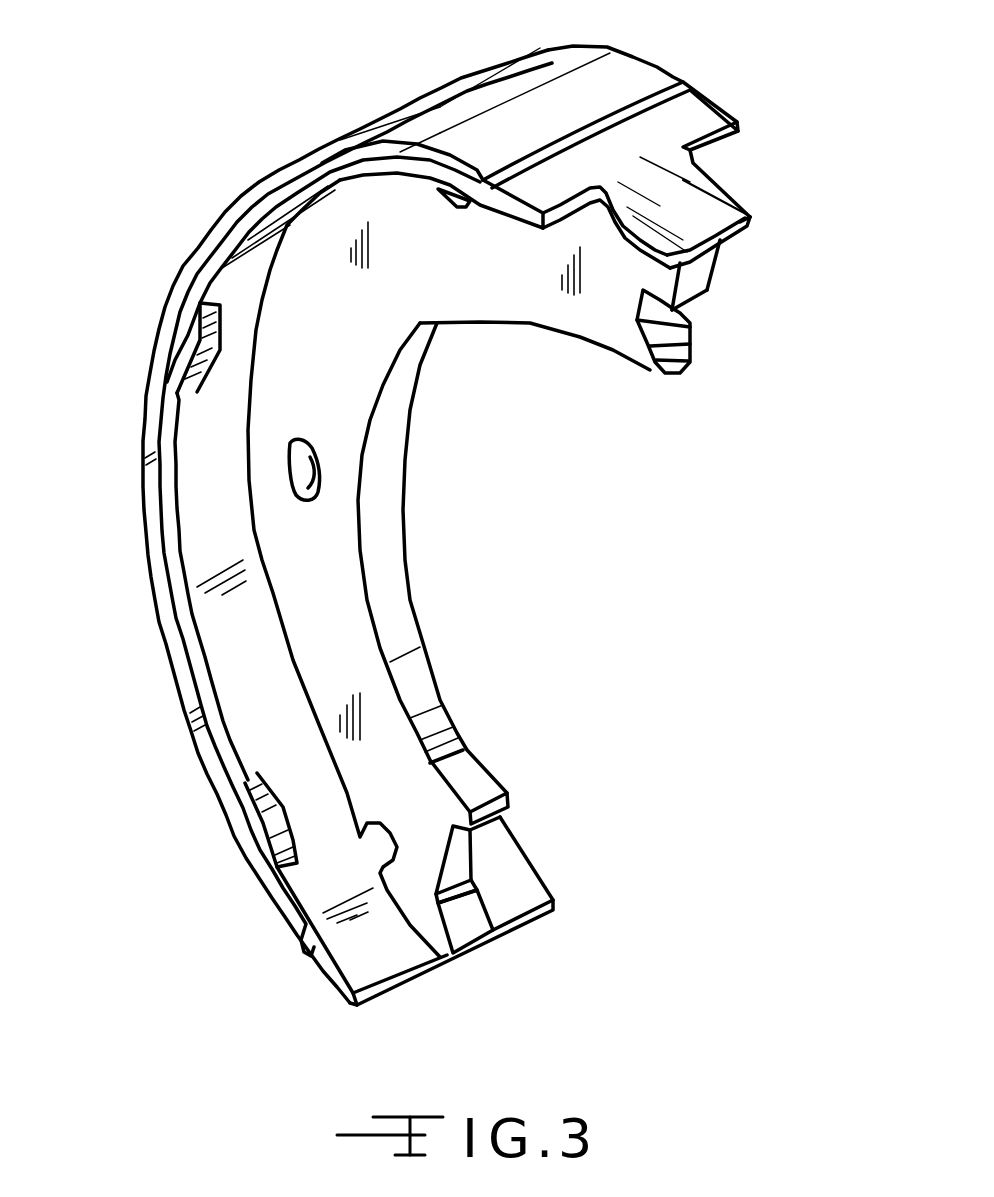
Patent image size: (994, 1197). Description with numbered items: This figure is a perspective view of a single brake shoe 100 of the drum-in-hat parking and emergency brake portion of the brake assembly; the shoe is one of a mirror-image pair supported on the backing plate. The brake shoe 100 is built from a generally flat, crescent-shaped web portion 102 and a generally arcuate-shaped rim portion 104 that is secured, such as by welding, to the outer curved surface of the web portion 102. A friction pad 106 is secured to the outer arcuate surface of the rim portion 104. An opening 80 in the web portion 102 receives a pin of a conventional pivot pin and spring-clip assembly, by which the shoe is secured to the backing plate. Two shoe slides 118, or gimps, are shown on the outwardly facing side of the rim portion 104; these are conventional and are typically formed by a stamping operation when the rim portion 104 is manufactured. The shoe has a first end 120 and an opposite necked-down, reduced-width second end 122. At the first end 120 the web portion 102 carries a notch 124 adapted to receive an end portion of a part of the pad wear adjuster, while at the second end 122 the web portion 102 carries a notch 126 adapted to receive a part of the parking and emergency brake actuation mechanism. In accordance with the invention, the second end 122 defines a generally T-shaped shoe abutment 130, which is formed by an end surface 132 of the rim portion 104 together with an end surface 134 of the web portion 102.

The opening 80 is at (310, 489).
The brake shoe 100 is at (188, 748).
The web portion 102 is at (330, 563).
The rim portion 104 is at (195, 435).
The friction pad 106 is at (627, 66).
The shoe slide 118 is at (190, 352).
The first end 120 is at (516, 886).
The second end 122 is at (755, 282).
The notch 124 is at (463, 858).
The notch 126 is at (663, 322).
The T-shaped shoe abutment 130 is at (736, 240).
The end surface of the rim portion 132 is at (738, 224).
The end surface of the web portion 134 is at (697, 290).